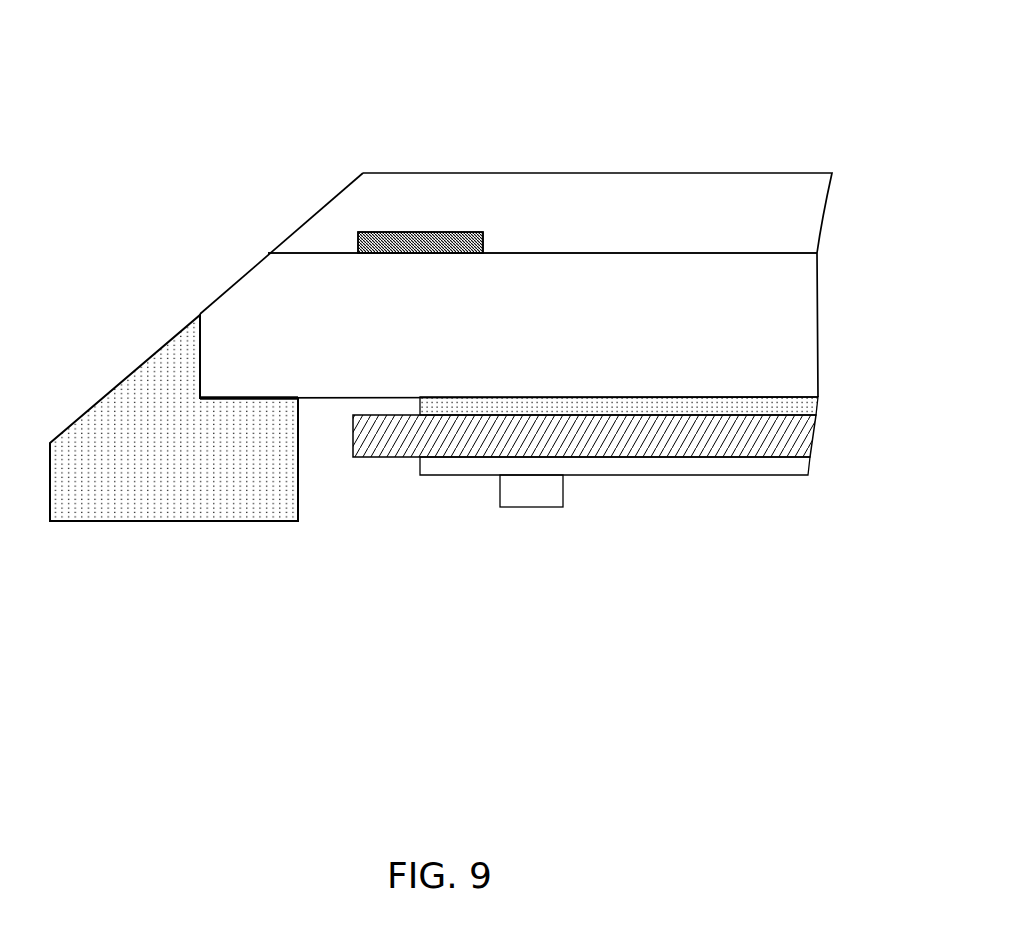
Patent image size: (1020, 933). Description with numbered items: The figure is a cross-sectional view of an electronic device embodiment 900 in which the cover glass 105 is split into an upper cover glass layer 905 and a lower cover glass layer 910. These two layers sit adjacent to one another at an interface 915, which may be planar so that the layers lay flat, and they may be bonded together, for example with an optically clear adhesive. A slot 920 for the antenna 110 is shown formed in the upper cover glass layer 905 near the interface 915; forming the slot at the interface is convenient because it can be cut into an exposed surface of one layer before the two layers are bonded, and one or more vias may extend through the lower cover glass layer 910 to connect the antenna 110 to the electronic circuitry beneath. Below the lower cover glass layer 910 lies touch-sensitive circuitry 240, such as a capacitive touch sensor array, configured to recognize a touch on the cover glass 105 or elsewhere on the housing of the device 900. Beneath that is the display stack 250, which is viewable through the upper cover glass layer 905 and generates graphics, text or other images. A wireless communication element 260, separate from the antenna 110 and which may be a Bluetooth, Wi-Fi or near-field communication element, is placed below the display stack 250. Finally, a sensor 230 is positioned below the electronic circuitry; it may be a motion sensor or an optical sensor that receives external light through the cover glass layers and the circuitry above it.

The embodiment 900 is at (337, 40).
The upper cover glass layer 905 is at (547, 195).
The interface 915 is at (600, 253).
The cover glass 105 is at (707, 172).
The antenna 110 is at (358, 232).
The slot 920 is at (422, 232).
The lower cover glass layer 910 is at (762, 325).
The touch-sensitive circuitry 240 is at (820, 400).
The display stack 250 is at (812, 448).
The wireless communication element 260 is at (812, 476).
The sensor 230 is at (535, 508).